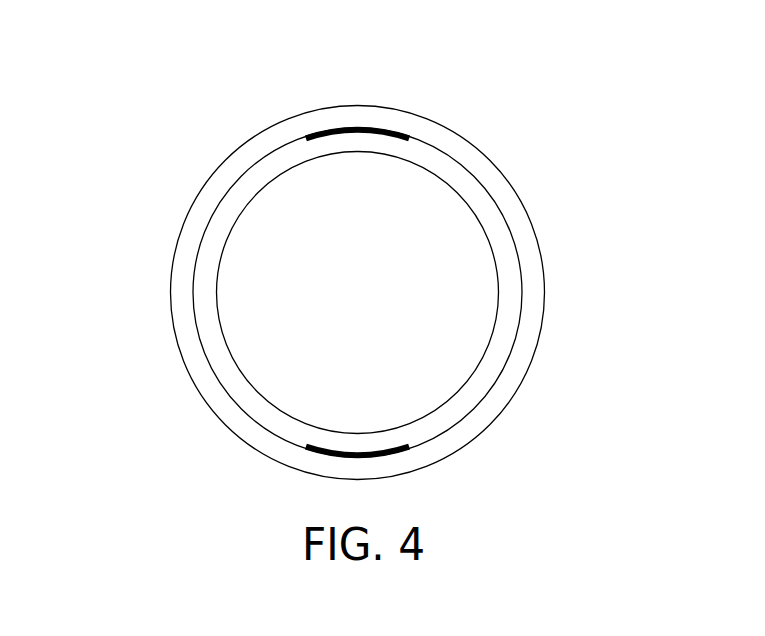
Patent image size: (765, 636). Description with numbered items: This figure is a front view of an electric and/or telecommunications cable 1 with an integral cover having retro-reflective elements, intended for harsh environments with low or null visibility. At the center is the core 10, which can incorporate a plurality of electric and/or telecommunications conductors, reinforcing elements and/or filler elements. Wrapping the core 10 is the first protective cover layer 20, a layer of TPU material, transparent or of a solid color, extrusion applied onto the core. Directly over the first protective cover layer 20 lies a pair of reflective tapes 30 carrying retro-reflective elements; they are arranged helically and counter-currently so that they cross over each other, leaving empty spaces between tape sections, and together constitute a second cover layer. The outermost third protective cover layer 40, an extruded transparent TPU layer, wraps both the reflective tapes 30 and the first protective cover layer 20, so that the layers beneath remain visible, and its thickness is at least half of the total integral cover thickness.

The electric and/or telecommunications cable 1 is at (148, 247).
The core 10 is at (467, 292).
The first protective cover layer 20 is at (482, 202).
The reflective tapes 30 is at (399, 131).
The third protective cover layer 40 is at (342, 113).